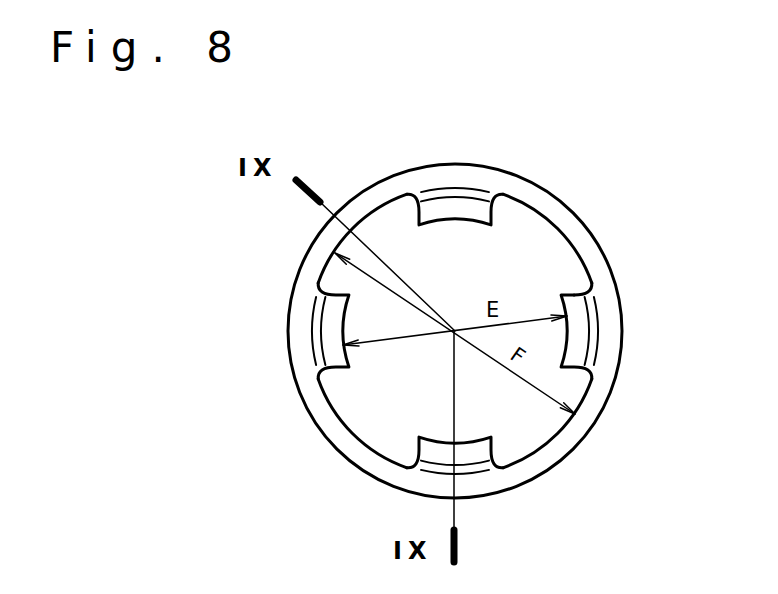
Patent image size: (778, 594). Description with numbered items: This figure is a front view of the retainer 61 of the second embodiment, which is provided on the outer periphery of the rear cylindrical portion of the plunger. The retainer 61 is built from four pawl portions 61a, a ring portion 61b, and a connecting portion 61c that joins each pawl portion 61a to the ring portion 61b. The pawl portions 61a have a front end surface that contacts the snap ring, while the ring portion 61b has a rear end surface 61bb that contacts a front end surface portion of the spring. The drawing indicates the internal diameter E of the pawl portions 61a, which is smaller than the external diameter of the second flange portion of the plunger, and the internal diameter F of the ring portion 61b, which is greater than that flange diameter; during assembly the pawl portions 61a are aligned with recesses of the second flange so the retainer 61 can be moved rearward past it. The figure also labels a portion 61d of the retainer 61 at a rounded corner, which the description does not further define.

The retainer 61 is at (553, 190).
The pawl portion 61a is at (481, 222).
The ring portion 61b is at (381, 186).
The rear end surface 61bb is at (451, 189).
The connecting portion 61c is at (485, 198).
The rounded corner portion 61d is at (565, 260).